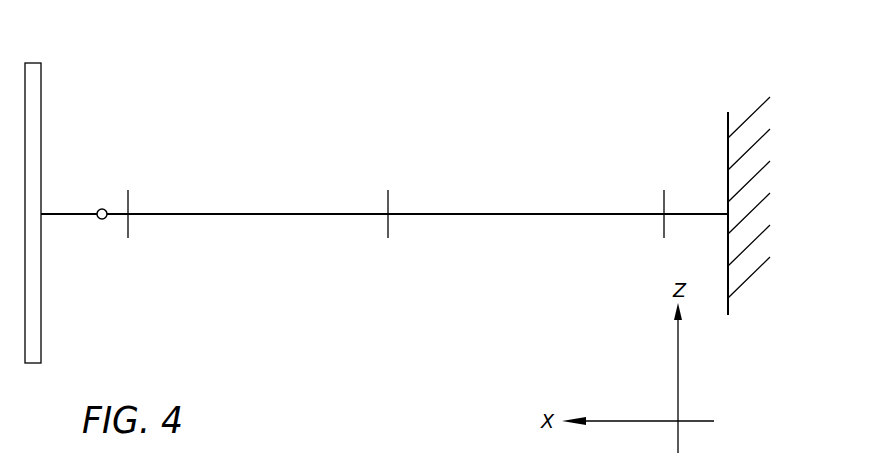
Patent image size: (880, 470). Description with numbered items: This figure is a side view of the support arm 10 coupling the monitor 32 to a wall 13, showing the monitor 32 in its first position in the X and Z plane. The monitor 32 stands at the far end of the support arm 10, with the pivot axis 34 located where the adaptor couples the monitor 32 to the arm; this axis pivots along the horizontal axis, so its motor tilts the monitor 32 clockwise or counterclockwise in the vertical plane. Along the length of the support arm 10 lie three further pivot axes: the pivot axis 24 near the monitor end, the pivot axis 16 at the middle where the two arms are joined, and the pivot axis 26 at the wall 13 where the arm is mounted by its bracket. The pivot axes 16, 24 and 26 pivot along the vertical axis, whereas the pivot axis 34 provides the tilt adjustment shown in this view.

The support arm 10 is at (280, 100).
The wall 13 is at (768, 145).
The pivot axis 16 is at (386, 202).
The pivot axis 24 is at (131, 200).
The pivot axis 26 is at (662, 203).
The monitor 32 is at (33, 63).
The pivot axis 34 is at (102, 207).